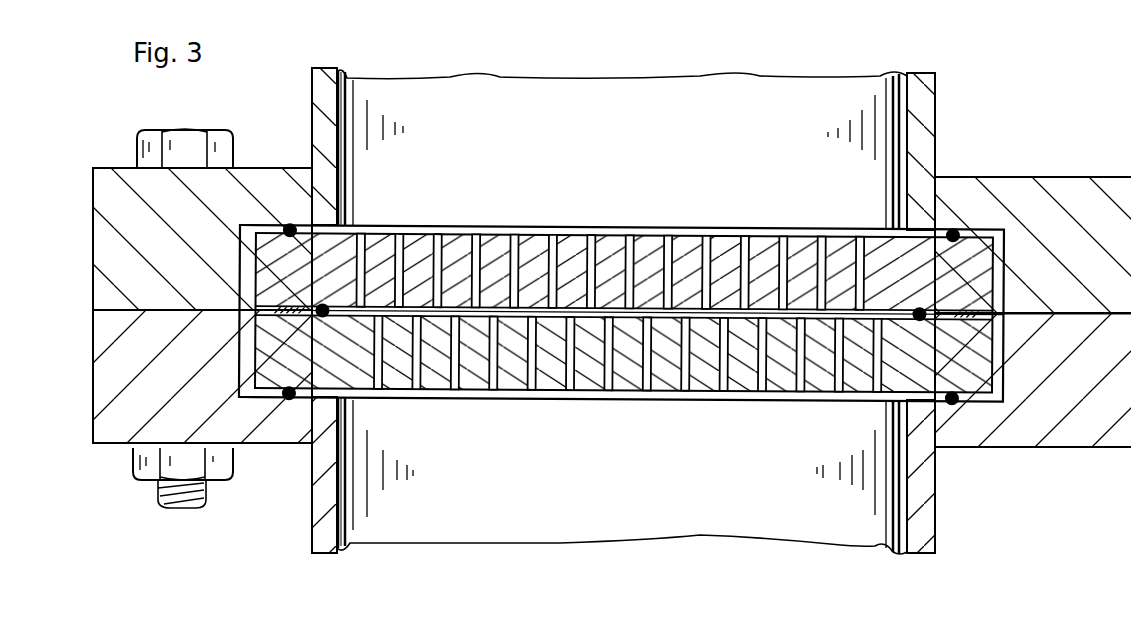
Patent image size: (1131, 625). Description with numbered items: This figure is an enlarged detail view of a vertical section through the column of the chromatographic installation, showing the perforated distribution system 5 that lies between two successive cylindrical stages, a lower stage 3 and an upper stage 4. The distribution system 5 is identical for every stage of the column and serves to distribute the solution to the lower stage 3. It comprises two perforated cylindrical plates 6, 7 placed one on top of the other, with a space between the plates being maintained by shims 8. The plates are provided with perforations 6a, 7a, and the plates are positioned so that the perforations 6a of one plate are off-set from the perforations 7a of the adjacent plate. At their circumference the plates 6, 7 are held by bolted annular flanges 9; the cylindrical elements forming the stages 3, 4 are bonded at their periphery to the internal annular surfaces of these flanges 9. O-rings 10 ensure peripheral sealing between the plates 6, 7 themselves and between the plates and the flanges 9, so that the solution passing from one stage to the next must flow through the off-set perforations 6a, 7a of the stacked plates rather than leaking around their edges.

The lower stage 3 is at (320, 522).
The stage 4 is at (322, 123).
The perforated distribution system 5 is at (760, 207).
The perforated cylindrical plate 6 is at (547, 393).
The perforations 6a is at (605, 388).
The perforated cylindrical plate 7 is at (612, 240).
The perforations 7a is at (697, 240).
The shims 8 is at (297, 318).
The bolted annular flanges 9 is at (115, 432).
The O-rings 10 is at (282, 224).